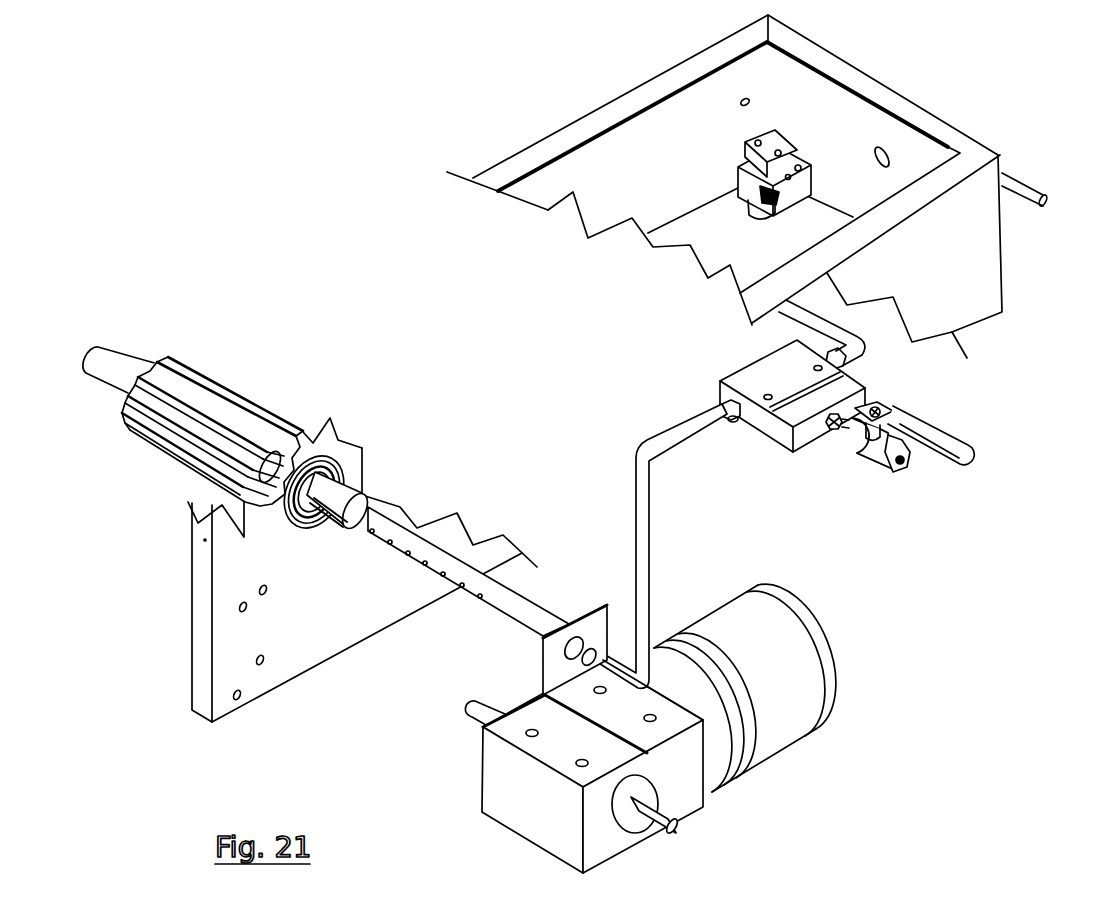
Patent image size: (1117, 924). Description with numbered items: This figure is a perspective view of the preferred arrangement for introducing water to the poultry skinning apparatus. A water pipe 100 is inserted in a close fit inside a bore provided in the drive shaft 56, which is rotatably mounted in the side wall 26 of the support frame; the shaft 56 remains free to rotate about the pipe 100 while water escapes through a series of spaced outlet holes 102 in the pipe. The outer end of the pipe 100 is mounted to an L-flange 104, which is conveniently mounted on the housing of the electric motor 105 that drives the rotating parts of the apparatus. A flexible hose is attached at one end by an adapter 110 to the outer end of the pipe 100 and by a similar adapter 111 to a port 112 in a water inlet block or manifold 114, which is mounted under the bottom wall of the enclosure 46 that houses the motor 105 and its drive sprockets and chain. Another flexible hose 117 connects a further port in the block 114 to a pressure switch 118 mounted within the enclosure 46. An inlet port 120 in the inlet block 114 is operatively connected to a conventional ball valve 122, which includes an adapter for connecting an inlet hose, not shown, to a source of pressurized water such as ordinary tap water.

The side wall 26 is at (202, 677).
The enclosure 46 is at (1002, 262).
The drive shaft 56 is at (340, 492).
The water pipe 100 is at (425, 547).
The outlet holes 102 is at (372, 535).
The L-flange 104 is at (652, 526).
The electric motor 105 is at (690, 813).
The adapter 110 is at (572, 637).
The adapter 111 is at (720, 404).
The port 112 is at (733, 422).
The water inlet block 114 is at (755, 360).
The flexible hose 117 is at (868, 356).
The pressure switch 118 is at (743, 164).
The inlet port 120 is at (836, 430).
The ball valve 122 is at (872, 462).